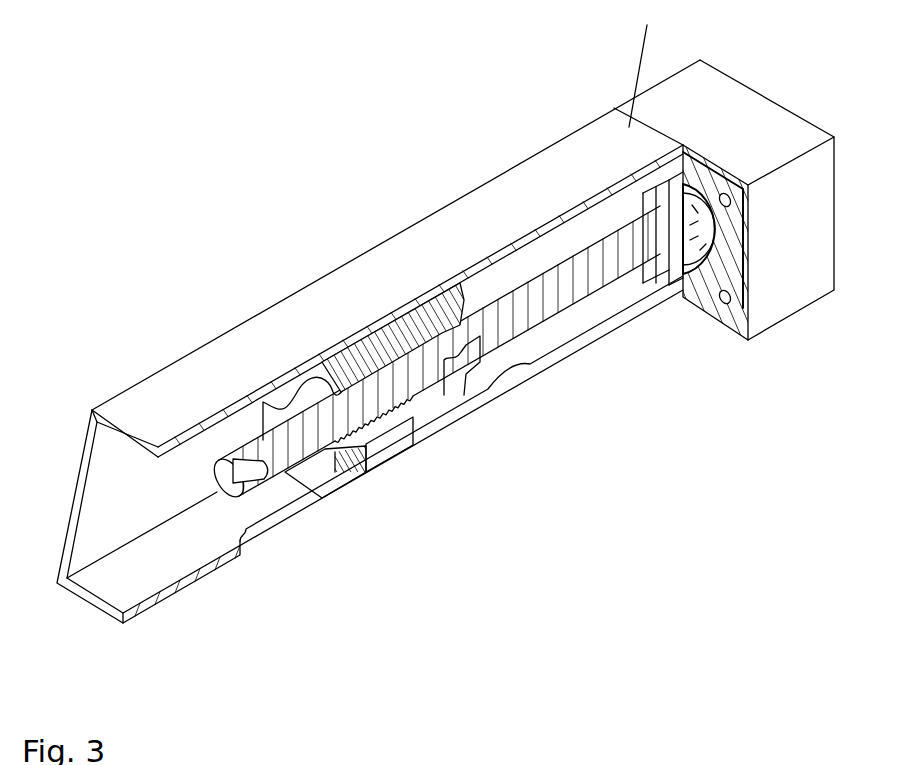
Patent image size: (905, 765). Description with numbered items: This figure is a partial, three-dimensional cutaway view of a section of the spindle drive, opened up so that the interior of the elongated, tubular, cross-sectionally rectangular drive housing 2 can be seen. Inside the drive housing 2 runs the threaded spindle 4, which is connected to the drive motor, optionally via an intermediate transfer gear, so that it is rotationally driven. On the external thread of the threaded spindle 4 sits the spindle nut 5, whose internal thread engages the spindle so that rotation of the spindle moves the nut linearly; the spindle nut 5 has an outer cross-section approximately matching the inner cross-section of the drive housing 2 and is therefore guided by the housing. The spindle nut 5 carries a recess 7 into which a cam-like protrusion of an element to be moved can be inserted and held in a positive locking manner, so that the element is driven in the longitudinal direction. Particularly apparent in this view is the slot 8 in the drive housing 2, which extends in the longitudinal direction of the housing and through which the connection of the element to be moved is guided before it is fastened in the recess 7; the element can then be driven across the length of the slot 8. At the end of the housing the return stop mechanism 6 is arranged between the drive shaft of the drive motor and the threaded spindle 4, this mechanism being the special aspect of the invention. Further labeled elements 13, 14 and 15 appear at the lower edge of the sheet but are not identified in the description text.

The drive housing 2 is at (582, 764).
The threaded spindle 4 is at (543, 313).
The spindle nut 5 is at (368, 340).
The return stop mechanism 6 is at (704, 280).
The recess 7 is at (402, 438).
The slot 8 is at (288, 506).
The rail element 13 is at (527, 764).
The rail element 14 is at (347, 764).
The rail element 15 is at (395, 764).